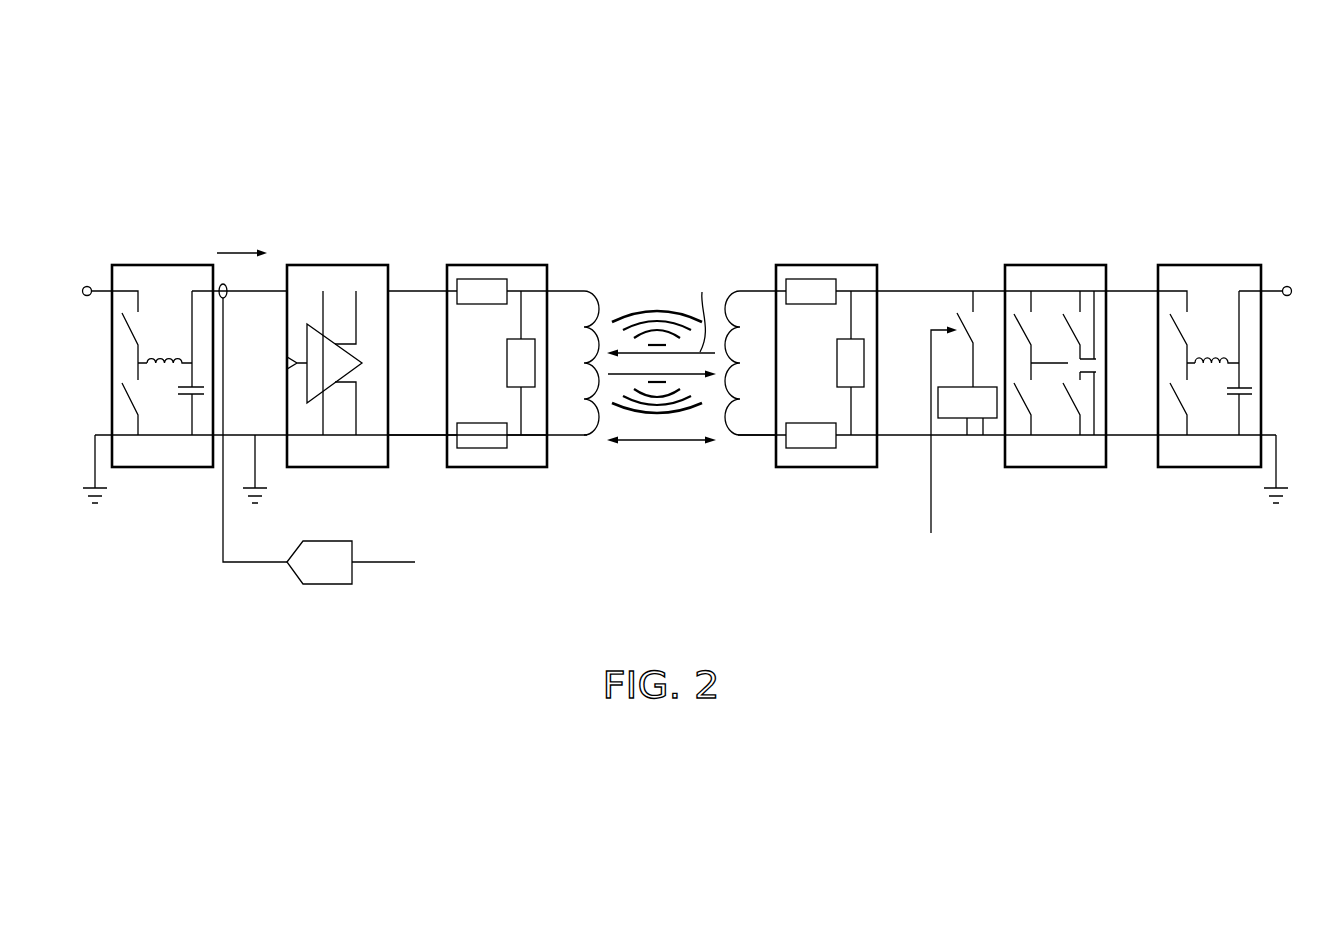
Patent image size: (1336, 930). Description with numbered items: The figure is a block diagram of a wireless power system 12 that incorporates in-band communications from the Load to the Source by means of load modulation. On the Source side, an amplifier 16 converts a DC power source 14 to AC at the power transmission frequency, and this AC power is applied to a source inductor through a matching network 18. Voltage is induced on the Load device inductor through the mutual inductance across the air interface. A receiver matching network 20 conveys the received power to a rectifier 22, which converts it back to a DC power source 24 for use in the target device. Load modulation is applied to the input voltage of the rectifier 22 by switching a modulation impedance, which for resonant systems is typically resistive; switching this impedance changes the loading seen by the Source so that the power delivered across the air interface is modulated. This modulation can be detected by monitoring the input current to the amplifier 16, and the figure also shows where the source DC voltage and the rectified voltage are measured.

The wireless power system 12 is at (247, 108).
The DC power source 14 is at (173, 467).
The amplifier 16 is at (375, 467).
The matching network 18 is at (497, 467).
The receiver matching network 20 is at (838, 467).
The rectifier 22 is at (1067, 467).
The DC power source 24 is at (1205, 467).